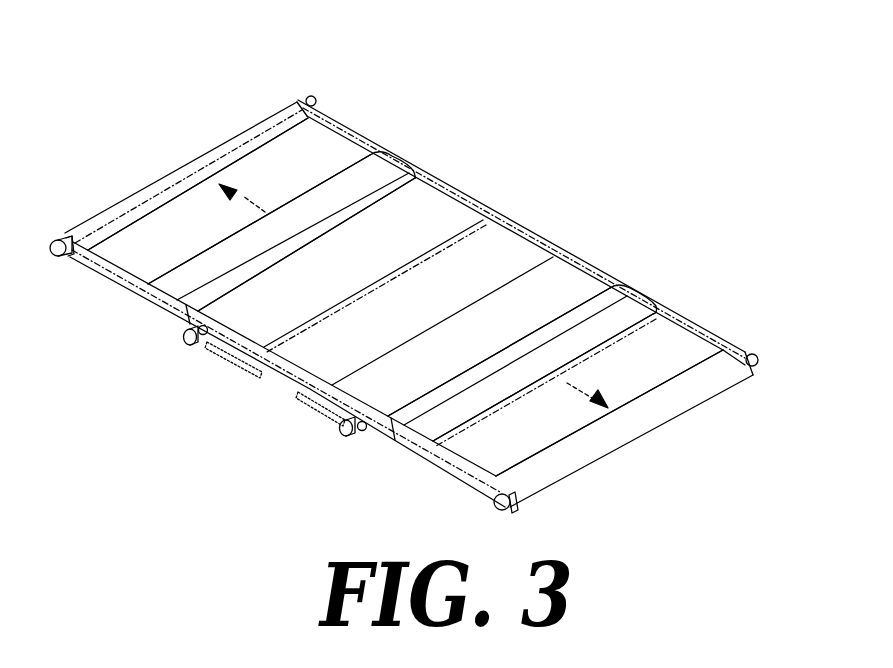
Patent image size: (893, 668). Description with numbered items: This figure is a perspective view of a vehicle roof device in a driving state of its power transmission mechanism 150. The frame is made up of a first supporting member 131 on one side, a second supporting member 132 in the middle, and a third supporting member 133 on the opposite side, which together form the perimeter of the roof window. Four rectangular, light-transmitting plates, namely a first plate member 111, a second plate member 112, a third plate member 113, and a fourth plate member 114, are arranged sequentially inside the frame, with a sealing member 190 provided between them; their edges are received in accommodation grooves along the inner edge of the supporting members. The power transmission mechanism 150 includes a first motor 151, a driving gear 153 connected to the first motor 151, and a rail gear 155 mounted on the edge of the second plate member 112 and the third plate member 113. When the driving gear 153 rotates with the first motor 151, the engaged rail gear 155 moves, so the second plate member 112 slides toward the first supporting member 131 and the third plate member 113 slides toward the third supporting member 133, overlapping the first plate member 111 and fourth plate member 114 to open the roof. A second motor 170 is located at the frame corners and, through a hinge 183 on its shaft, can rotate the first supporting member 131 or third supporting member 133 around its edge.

The first plate member 111 is at (330, 150).
The second plate member 112 is at (452, 215).
The third plate member 113 is at (560, 270).
The fourth plate member 114 is at (686, 345).
The first supporting member 131 is at (175, 170).
The second supporting member 132 is at (512, 218).
The third supporting member 133 is at (650, 425).
The power transmission mechanism 150 is at (234, 402).
The first motor 151 is at (184, 341).
The driving gear 153 is at (203, 336).
The rail gear 155 is at (275, 385).
The second motor 170 is at (314, 94).
The hinge bracket 183 is at (63, 232).
The sealing member 190 is at (411, 168).